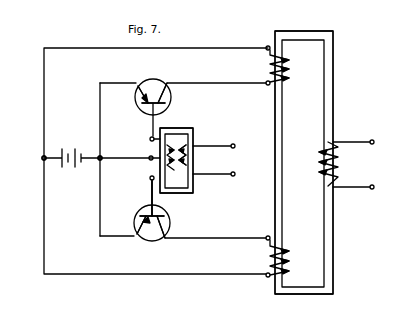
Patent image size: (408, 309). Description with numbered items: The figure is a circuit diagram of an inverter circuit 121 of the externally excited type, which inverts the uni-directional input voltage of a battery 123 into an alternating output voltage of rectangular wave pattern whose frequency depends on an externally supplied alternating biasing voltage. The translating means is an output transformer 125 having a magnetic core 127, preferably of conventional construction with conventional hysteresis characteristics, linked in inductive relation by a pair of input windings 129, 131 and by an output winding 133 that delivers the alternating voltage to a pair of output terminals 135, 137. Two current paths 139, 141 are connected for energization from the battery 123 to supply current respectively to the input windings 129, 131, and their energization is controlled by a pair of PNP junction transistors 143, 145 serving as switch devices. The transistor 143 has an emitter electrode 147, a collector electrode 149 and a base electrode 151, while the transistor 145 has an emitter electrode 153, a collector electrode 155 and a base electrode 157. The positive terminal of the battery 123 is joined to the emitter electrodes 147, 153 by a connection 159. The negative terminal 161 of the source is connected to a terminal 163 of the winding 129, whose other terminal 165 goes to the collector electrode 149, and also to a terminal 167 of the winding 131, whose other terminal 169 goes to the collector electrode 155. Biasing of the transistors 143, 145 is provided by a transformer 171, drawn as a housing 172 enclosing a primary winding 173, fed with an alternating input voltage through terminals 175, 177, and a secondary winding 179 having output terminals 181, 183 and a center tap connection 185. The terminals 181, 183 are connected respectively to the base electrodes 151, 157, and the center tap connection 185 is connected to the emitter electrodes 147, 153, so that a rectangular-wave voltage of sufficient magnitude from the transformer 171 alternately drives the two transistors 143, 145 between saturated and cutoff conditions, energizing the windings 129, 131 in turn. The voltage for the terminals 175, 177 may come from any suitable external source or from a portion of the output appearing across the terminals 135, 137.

The inverter circuit 121 is at (157, 296).
The battery 123 is at (71, 168).
The output transformer 125 is at (364, 76).
The magnetic core 127 is at (334, 230).
The input winding 129 is at (286, 78).
The input winding 131 is at (283, 250).
The output winding 133 is at (340, 165).
The output terminal 135 is at (373, 140).
The output terminal 137 is at (373, 189).
The current path 139 is at (112, 63).
The current path 141 is at (108, 258).
The transistor 143 is at (172, 97).
The transistor 145 is at (171, 222).
The emitter electrode 147 is at (140, 93).
The collector electrode 149 is at (166, 81).
The base electrode 151 is at (147, 108).
The emitter electrode 153 is at (134, 222).
The collector electrode 155 is at (164, 240).
The base electrode 157 is at (158, 213).
The connection 159 is at (102, 160).
The negative terminal 161 is at (42, 157).
The terminal 163 is at (267, 47).
The terminal 165 is at (267, 85).
The terminal 167 is at (266, 277).
The terminal 169 is at (266, 237).
The transformer 171 is at (215, 134).
The housing of control element 172 is at (194, 185).
The primary winding 173 is at (187, 159).
The terminal 175 is at (235, 144).
The terminal 177 is at (235, 176).
The secondary winding 179 is at (150, 176).
The output terminal 181 is at (135, 134).
The output terminal 183 is at (151, 192).
The center tap connection 185 is at (150, 156).